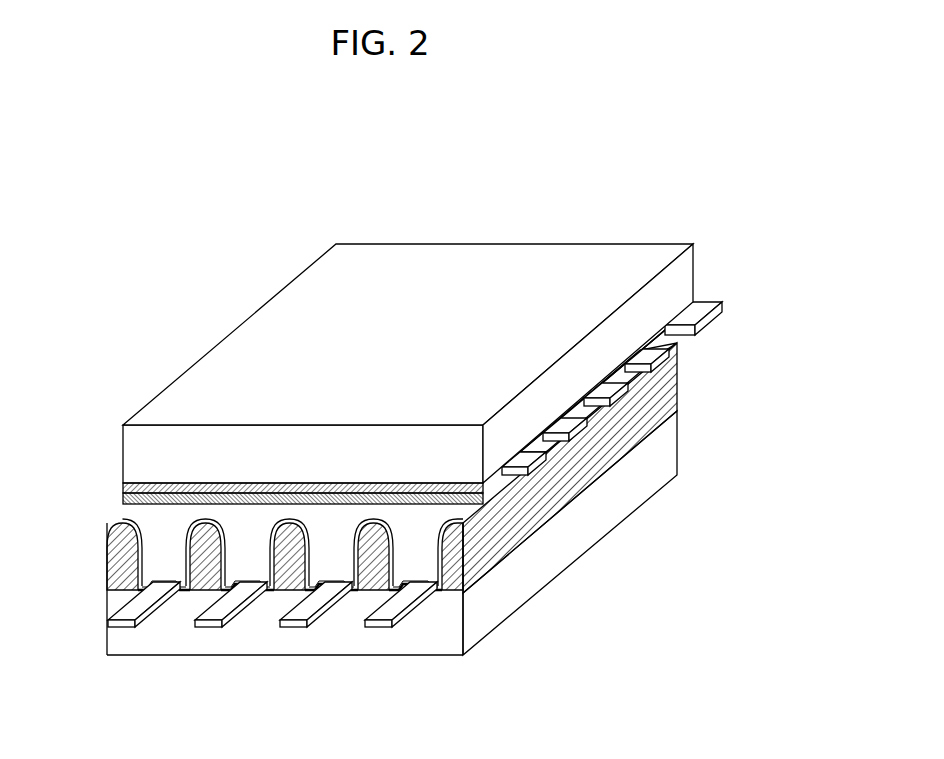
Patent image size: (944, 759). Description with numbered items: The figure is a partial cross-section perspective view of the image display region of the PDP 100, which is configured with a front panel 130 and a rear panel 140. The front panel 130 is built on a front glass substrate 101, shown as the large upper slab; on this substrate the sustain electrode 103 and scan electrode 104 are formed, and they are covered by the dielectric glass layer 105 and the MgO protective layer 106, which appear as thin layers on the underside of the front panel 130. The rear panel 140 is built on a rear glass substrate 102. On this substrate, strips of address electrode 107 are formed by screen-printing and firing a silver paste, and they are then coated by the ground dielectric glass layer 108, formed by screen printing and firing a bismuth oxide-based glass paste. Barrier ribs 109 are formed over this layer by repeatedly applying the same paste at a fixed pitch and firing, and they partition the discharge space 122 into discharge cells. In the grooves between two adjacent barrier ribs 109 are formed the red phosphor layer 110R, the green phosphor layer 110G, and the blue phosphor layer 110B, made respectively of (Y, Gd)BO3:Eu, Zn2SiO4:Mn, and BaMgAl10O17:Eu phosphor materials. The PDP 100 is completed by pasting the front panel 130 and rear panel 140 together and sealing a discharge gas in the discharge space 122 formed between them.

The PDP 100 is at (745, 331).
The front glass substrate 101 is at (130, 437).
The rear glass substrate 102 is at (420, 640).
The sustain electrode 103 is at (532, 440).
The scan electrode 104 is at (673, 375).
The dielectric glass layer 105 is at (125, 488).
The MgO protective layer 106 is at (125, 499).
The address electrode 107 is at (143, 610).
The ground dielectric glass layer 108 is at (108, 592).
The barrier rib 109 is at (270, 545).
The red phosphor layer 110R is at (112, 630).
The green phosphor layer 110G is at (233, 628).
The blue phosphor layer 110B is at (335, 625).
The discharge space 122 is at (418, 518).
The front panel 130 is at (705, 270).
The rear panel 140 is at (683, 440).